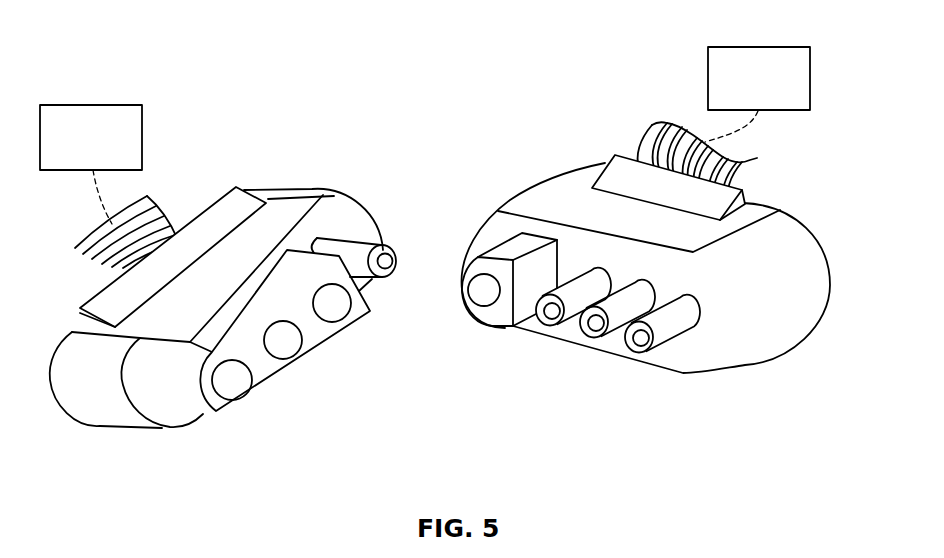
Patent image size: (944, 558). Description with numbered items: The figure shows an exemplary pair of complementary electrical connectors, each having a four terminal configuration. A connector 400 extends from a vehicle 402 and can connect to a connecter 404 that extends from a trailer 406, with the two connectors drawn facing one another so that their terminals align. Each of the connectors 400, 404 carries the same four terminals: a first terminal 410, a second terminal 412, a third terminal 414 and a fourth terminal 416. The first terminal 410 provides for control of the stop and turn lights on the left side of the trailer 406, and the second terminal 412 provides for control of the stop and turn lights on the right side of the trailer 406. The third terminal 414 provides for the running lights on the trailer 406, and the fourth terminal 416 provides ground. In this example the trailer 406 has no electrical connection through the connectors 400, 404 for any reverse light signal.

The connector 400 is at (195, 442).
The vehicle 402 is at (101, 107).
The connecter 404 is at (713, 386).
The trailer 406 is at (768, 47).
The first terminal 410 is at (387, 261).
The second terminal 412 is at (333, 314).
The third terminal 414 is at (287, 352).
The fourth terminal 416 is at (233, 387).